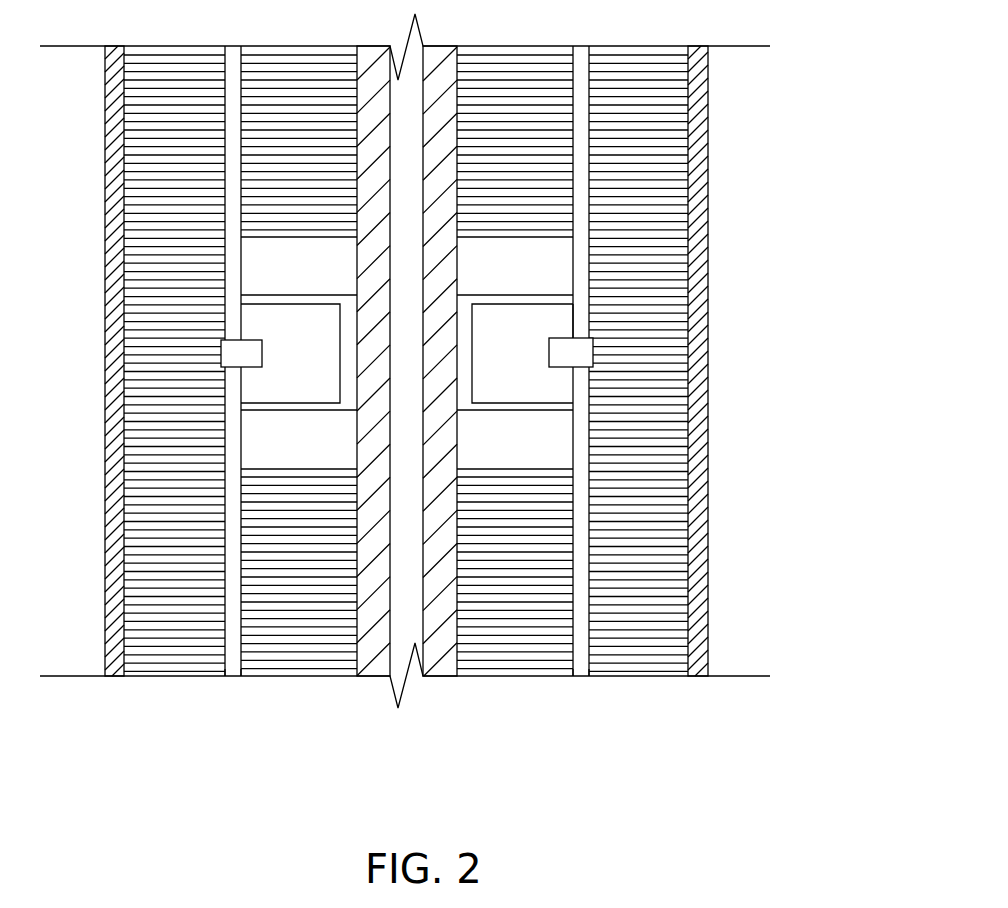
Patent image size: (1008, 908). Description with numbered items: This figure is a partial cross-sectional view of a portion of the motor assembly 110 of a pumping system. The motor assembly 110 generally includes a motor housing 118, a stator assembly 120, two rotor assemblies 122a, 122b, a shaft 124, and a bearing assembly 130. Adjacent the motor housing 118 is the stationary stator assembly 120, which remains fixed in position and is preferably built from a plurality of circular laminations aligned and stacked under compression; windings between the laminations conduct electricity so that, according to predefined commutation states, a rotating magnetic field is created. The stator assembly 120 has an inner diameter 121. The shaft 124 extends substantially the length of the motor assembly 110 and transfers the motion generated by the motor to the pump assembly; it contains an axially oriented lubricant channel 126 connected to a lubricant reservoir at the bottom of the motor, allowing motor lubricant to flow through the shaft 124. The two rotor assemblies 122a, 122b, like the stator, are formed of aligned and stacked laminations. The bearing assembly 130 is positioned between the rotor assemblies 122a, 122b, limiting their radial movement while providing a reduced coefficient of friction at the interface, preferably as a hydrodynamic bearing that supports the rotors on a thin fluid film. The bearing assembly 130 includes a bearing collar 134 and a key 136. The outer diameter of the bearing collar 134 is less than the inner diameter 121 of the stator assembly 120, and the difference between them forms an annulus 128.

The motor assembly 110 is at (823, 302).
The motor housing 118 is at (702, 526).
The stator assembly 120 is at (157, 317).
The inner diameter 121 is at (235, 676).
The rotor assembly 122a is at (550, 167).
The rotor assembly 122b is at (298, 525).
The shaft 124 is at (367, 287).
The lubricant channel 126 is at (408, 177).
The annulus 128 is at (232, 173).
The bearing assembly 130 is at (575, 333).
The bearing collar 134 is at (288, 383).
The key 136 is at (248, 352).